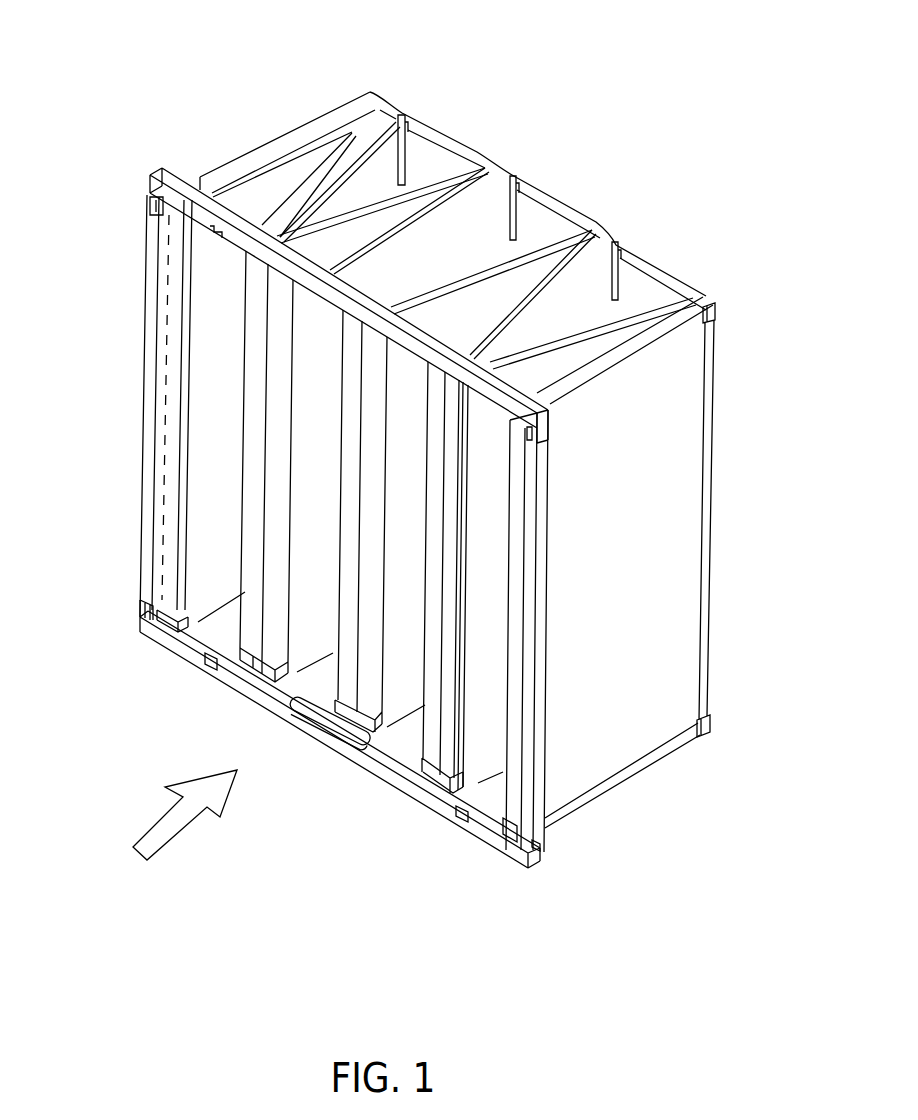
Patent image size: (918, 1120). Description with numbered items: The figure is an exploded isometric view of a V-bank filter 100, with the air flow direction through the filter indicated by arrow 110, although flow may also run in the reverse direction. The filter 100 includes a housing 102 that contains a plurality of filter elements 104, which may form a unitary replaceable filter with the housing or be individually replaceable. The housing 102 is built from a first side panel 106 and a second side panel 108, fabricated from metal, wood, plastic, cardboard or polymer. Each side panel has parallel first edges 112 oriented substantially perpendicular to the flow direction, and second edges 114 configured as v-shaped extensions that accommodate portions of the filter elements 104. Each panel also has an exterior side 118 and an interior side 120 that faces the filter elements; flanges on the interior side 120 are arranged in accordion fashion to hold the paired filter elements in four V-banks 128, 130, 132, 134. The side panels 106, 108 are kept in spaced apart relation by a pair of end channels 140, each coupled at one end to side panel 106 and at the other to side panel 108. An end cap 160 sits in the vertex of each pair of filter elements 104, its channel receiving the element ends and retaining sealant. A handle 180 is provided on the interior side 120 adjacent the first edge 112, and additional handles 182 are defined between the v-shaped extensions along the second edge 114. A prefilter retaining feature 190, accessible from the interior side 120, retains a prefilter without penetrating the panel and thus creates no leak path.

The V-bank filter 100 is at (622, 62).
The housing 102 is at (608, 198).
The filter elements 104 is at (677, 540).
The first side panel 106 is at (510, 857).
The second side panel 108 is at (688, 290).
The arrow 110 is at (170, 827).
The first edges 112 is at (323, 302).
The second edges 114 is at (492, 157).
The exterior side 118 is at (270, 135).
The interior side 120 is at (210, 630).
The V-bank 128 is at (494, 552).
The V-bank 130 is at (407, 556).
The V-bank 132 is at (301, 447).
The V-bank 134 is at (201, 385).
The end channels 140 is at (150, 283).
The end cap 160 is at (250, 532).
The handle 180 is at (285, 703).
The handles 182 is at (435, 123).
The prefilter retaining feature 190 is at (210, 662).